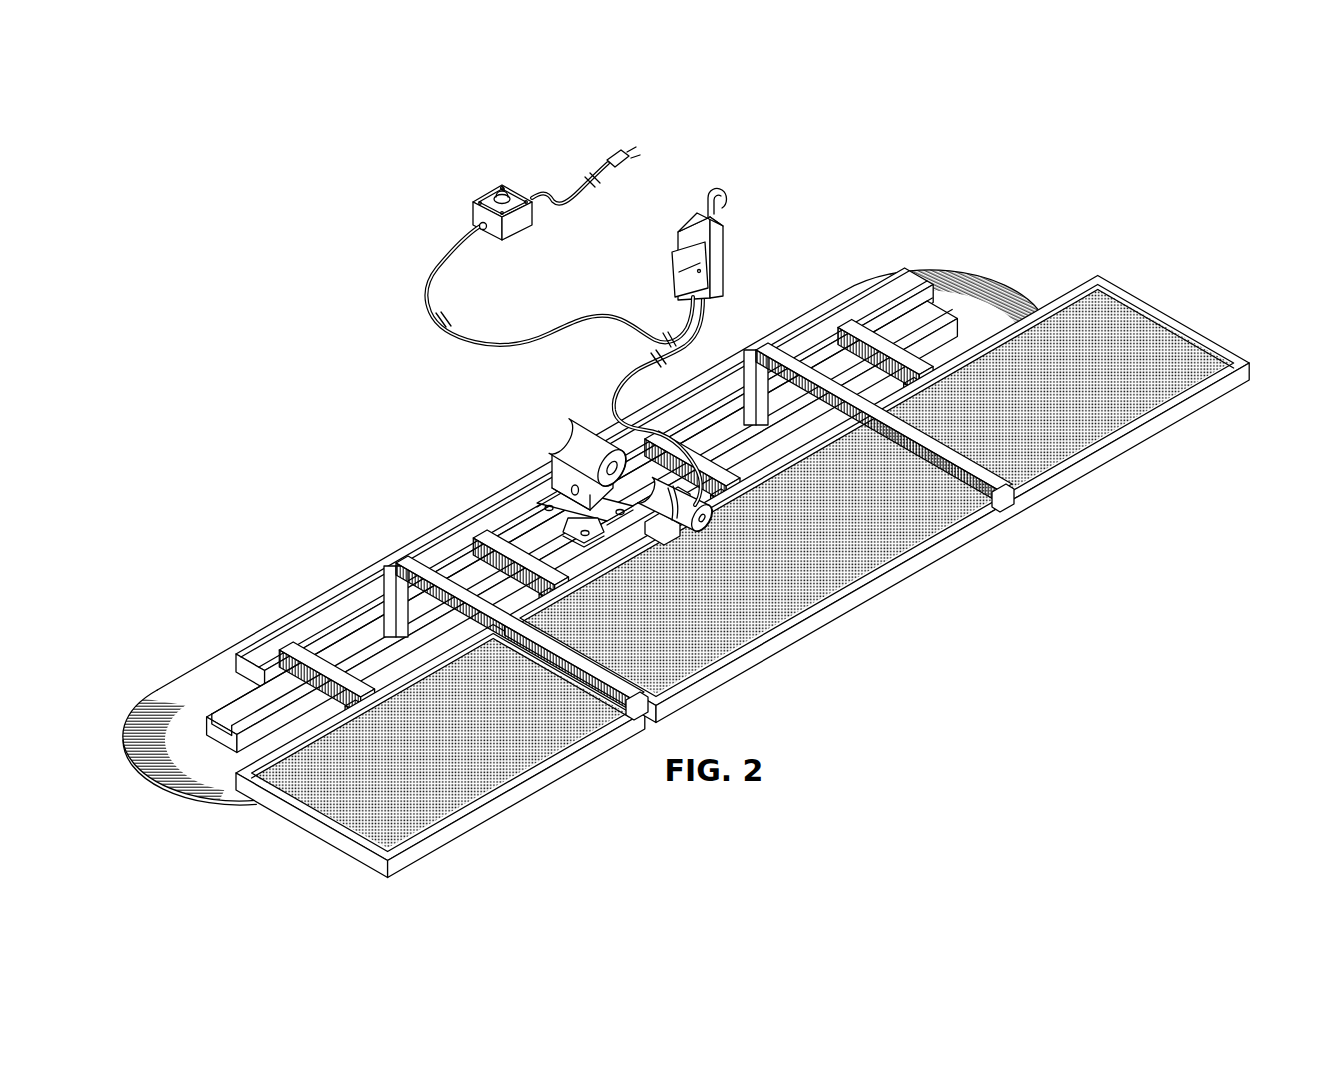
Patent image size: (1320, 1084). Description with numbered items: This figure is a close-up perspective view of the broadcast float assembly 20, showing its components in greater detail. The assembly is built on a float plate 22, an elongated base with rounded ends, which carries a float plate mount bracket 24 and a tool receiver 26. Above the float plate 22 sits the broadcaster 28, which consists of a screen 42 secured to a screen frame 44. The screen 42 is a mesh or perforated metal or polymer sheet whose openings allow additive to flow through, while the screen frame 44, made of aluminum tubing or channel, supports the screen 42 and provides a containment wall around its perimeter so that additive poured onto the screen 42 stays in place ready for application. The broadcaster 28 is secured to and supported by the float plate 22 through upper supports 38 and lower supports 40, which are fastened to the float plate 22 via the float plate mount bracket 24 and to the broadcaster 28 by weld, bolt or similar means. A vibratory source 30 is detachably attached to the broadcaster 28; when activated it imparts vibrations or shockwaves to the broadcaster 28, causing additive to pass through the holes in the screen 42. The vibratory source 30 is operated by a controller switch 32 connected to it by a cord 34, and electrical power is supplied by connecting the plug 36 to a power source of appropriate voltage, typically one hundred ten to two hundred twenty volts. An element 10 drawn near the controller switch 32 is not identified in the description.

The controller 10 is at (692, 224).
The broadcast float assembly 20 is at (430, 410).
The float plate 22 is at (216, 662).
The float plate mount bracket 24 is at (220, 748).
The tool receiver 26 is at (564, 420).
The broadcaster 28 is at (742, 554).
The vibratory source 30 is at (712, 520).
The controller switch 32 is at (492, 192).
The cord 34 is at (440, 264).
The plug 36 is at (620, 154).
The upper supports 38 is at (420, 548).
The lower supports 40 is at (290, 642).
The screen 42 is at (1120, 412).
The screen frame 44 is at (1066, 290).